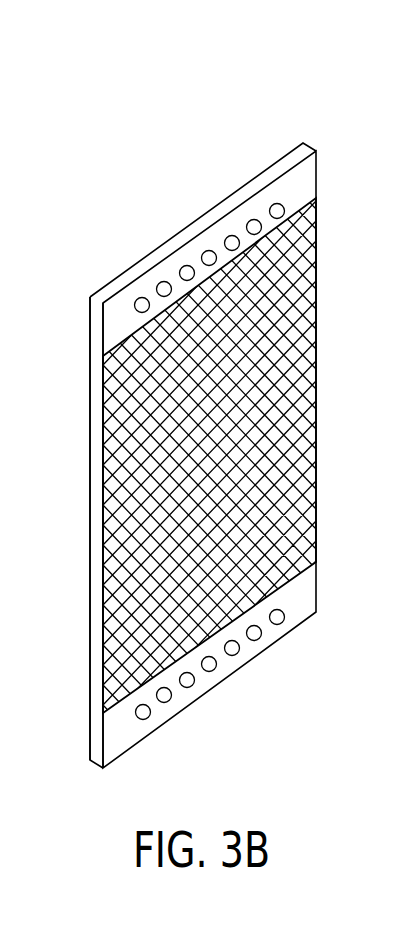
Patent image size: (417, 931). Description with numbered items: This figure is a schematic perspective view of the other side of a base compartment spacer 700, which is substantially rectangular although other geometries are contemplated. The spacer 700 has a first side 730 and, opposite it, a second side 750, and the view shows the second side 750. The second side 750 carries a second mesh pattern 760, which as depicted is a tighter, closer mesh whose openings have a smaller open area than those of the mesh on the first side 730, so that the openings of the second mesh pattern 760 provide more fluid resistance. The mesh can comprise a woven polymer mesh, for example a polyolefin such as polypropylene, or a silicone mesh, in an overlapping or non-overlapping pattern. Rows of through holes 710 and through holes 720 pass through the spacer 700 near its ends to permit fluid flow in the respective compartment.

The spacer 700 is at (240, 121).
The through holes 710 is at (283, 210).
The through holes 720 is at (259, 637).
The first side 730 is at (84, 313).
The second side 750 is at (294, 494).
The second mesh pattern 760 is at (297, 407).